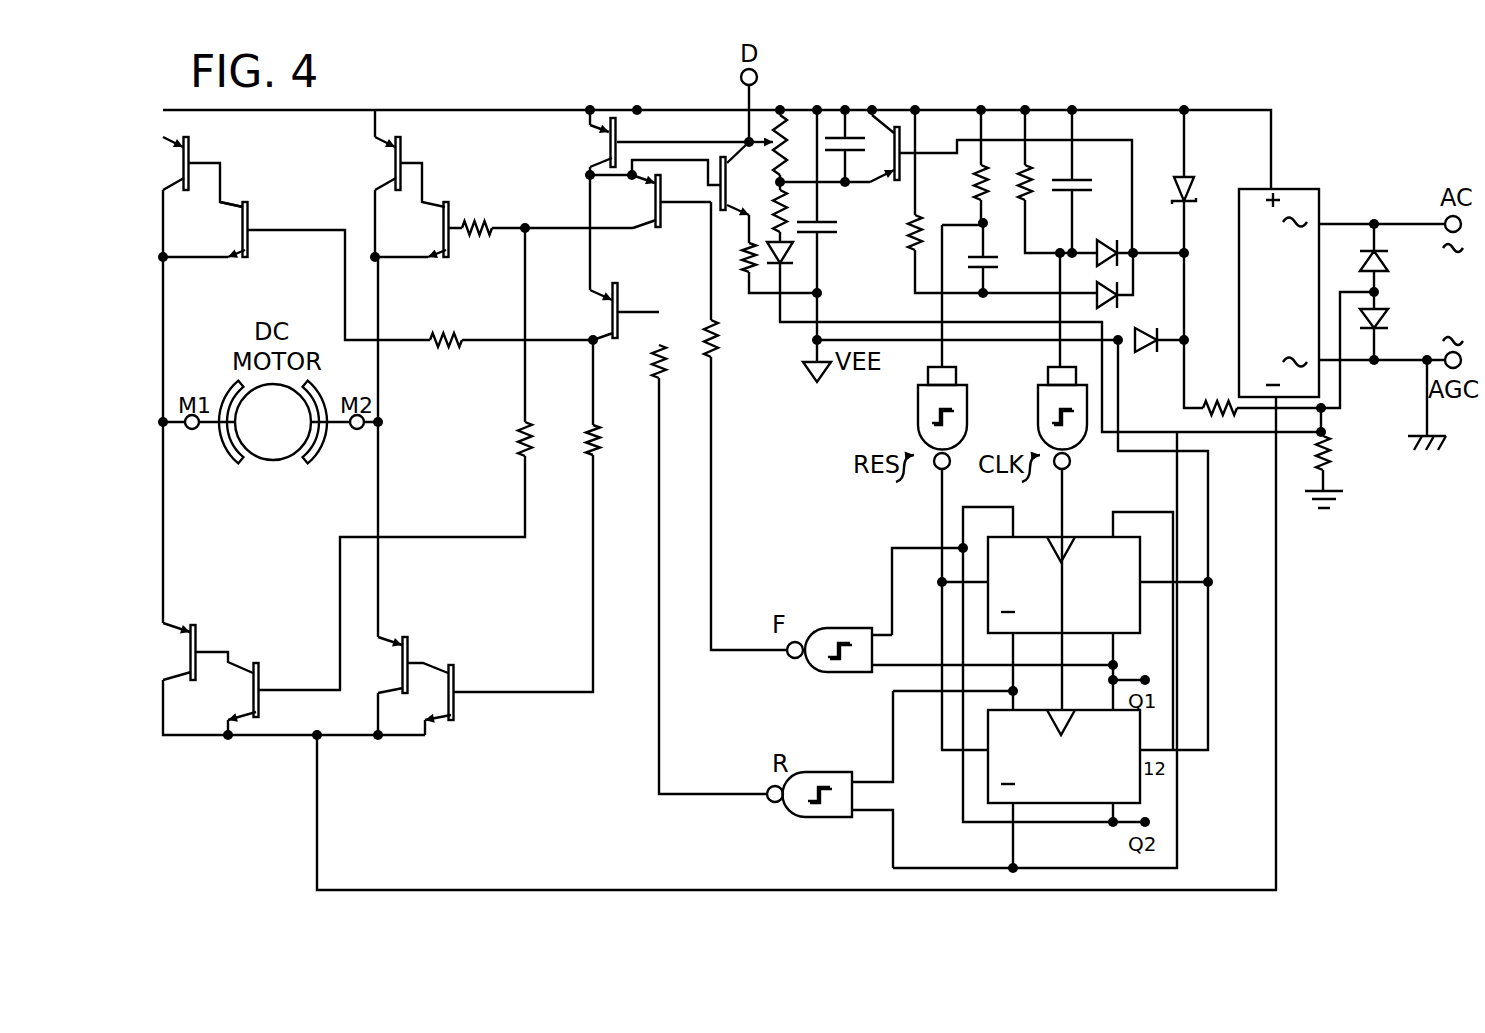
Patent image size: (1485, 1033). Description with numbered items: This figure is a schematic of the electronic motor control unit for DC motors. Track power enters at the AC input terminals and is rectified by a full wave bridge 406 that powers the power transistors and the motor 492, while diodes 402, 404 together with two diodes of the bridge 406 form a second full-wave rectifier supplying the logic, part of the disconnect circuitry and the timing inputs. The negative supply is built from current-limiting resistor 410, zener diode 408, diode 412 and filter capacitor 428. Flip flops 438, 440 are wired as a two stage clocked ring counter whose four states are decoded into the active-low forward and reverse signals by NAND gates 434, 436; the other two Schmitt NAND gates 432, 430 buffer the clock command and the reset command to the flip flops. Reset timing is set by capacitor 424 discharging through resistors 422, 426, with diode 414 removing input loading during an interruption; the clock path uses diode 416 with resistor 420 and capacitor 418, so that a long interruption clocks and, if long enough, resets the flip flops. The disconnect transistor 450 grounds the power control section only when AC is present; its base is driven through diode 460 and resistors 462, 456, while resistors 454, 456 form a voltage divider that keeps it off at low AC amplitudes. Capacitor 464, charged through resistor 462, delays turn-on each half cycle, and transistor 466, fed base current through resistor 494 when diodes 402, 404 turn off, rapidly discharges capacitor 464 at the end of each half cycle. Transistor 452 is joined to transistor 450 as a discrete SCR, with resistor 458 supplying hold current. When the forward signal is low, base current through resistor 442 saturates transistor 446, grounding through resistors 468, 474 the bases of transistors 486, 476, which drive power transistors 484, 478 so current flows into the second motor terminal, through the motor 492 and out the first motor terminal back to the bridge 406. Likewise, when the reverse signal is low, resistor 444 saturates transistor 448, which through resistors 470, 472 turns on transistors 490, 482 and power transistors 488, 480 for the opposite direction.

The diode 402 is at (1388, 262).
The diode 404 is at (1388, 318).
The rectifying bridge 406 is at (1319, 189).
The zener diode 408 is at (1195, 200).
The resistor 410 is at (1220, 412).
The diode 412 is at (1145, 352).
The diode 414 is at (1095, 290).
The diode 416 is at (1108, 241).
The capacitor 418 is at (1078, 180).
The resistor 420 is at (1025, 165).
The resistor 422 is at (981, 165).
The capacitor 424 is at (968, 258).
The resistor 426 is at (912, 257).
The capacitor 428 is at (840, 230).
The NAND gate 430 is at (918, 405).
The NAND gate 432 is at (1038, 422).
The NAND gate 434 is at (838, 628).
The NAND gate 436 is at (830, 772).
The flip flop 438 is at (1093, 537).
The flip flop 440 is at (1050, 805).
The resistor 442 is at (716, 350).
The resistor 444 is at (648, 362).
The transistor 446 is at (661, 217).
The transistor 448 is at (618, 297).
The disconnect transistor 450 is at (610, 141).
The transistor 452 is at (720, 160).
The resistor 454 is at (780, 117).
The resistor 456 is at (792, 157).
The resistor 458 is at (744, 247).
The diode 460 is at (792, 265).
The resistor 462 is at (787, 203).
The capacitor 464 is at (850, 134).
The transistor 466 is at (897, 127).
The resistor 468 is at (517, 440).
The resistor 470 is at (590, 442).
The resistor 472 is at (446, 350).
The resistor 474 is at (478, 238).
The transistor 476 is at (449, 222).
The transistor 478 is at (400, 152).
The transistor 480 is at (188, 152).
The transistor 482 is at (248, 217).
The transistor 484 is at (200, 640).
The transistor 486 is at (260, 677).
The transistor 488 is at (410, 645).
The transistor 490 is at (456, 677).
The motor 492 is at (273, 462).
The resistor 494 is at (1330, 452).